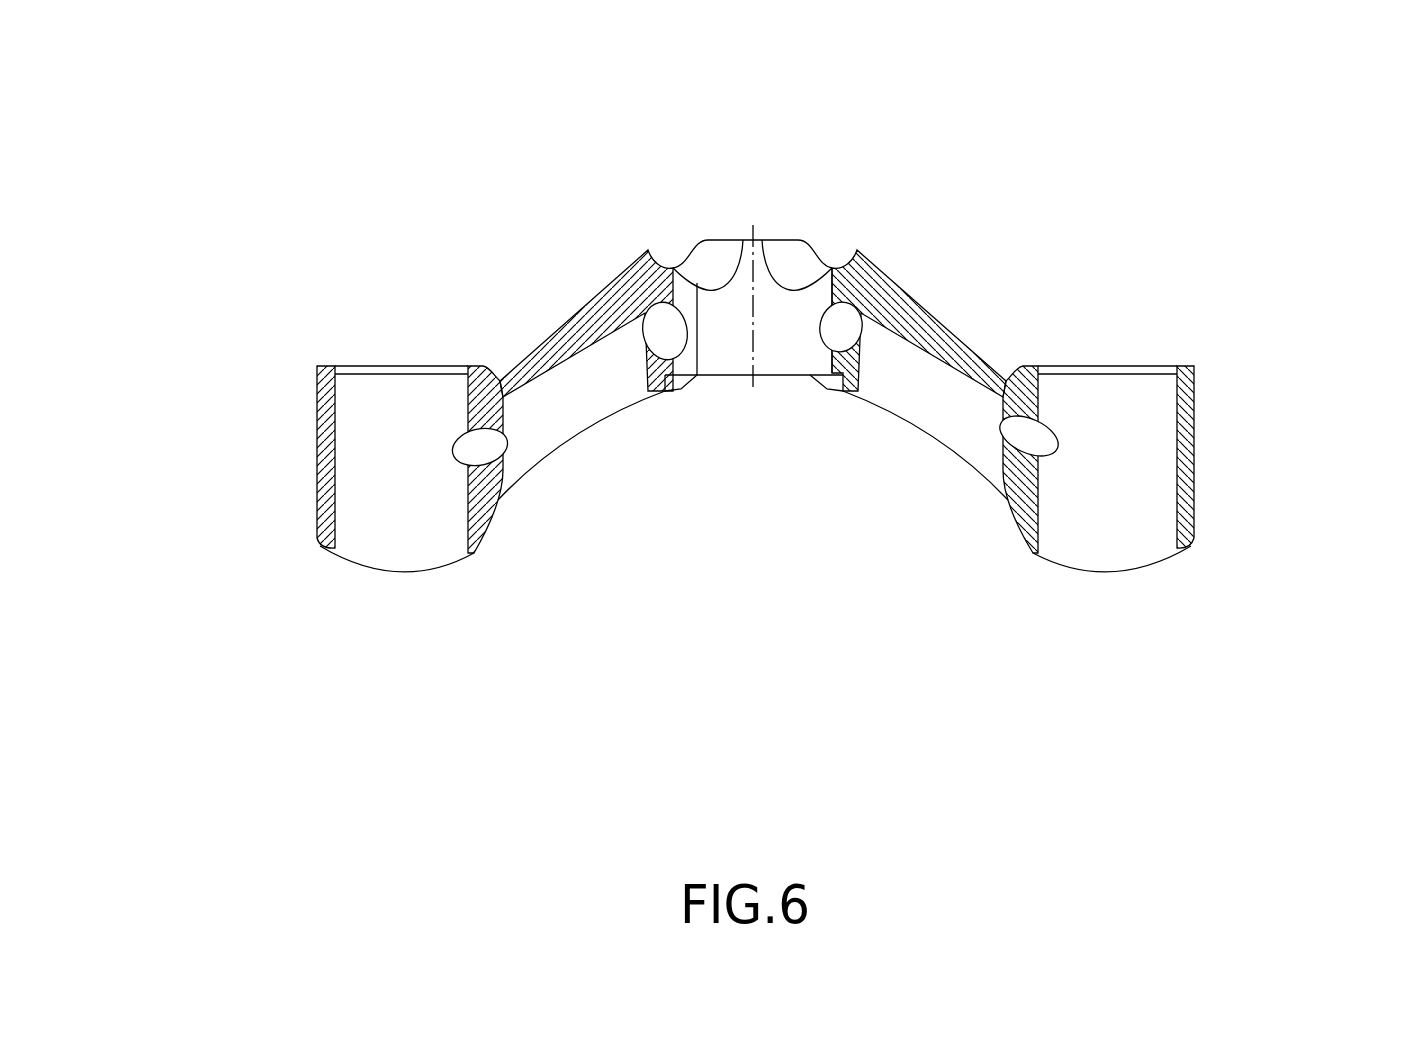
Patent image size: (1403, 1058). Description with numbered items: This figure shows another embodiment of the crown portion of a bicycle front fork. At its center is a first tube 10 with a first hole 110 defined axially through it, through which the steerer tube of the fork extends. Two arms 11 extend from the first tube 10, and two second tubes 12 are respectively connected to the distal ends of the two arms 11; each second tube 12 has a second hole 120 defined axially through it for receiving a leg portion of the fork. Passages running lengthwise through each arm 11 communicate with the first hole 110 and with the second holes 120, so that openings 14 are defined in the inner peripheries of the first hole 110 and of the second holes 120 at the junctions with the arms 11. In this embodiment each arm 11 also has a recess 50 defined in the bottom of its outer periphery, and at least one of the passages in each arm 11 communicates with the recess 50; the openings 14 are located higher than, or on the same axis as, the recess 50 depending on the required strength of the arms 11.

The first tube 10 is at (713, 240).
The arms 11 is at (594, 438).
The second tubes 12 is at (316, 395).
The second holes 120 is at (380, 497).
The opening 14 is at (650, 338).
The recess 50 is at (933, 380).
The first hole 110 is at (788, 348).